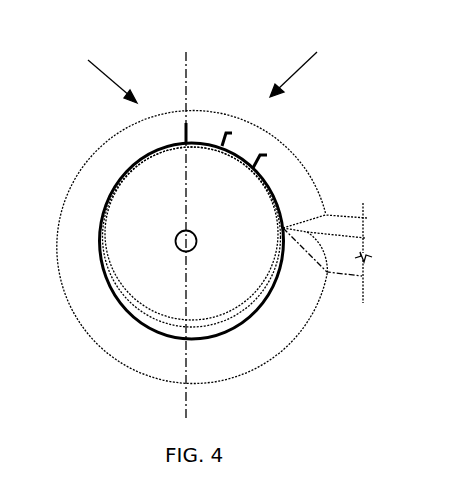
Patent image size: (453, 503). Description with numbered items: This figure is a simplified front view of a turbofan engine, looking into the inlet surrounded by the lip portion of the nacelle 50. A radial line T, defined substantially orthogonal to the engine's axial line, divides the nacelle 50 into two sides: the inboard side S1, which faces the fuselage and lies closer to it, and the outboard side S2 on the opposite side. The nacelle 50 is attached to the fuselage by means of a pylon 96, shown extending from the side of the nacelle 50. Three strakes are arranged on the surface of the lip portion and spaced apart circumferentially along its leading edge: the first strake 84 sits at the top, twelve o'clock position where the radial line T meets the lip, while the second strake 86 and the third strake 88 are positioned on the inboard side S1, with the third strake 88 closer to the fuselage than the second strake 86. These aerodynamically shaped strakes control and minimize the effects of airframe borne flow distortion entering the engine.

The nacelle 50 is at (112, 135).
The first strake 84 is at (186, 123).
The second strake 86 is at (230, 133).
The third strake 88 is at (266, 155).
The pylon 96 is at (329, 227).
The radial line T is at (181, 220).
The inboard side S1 is at (309, 60).
The outboard side S2 is at (105, 67).